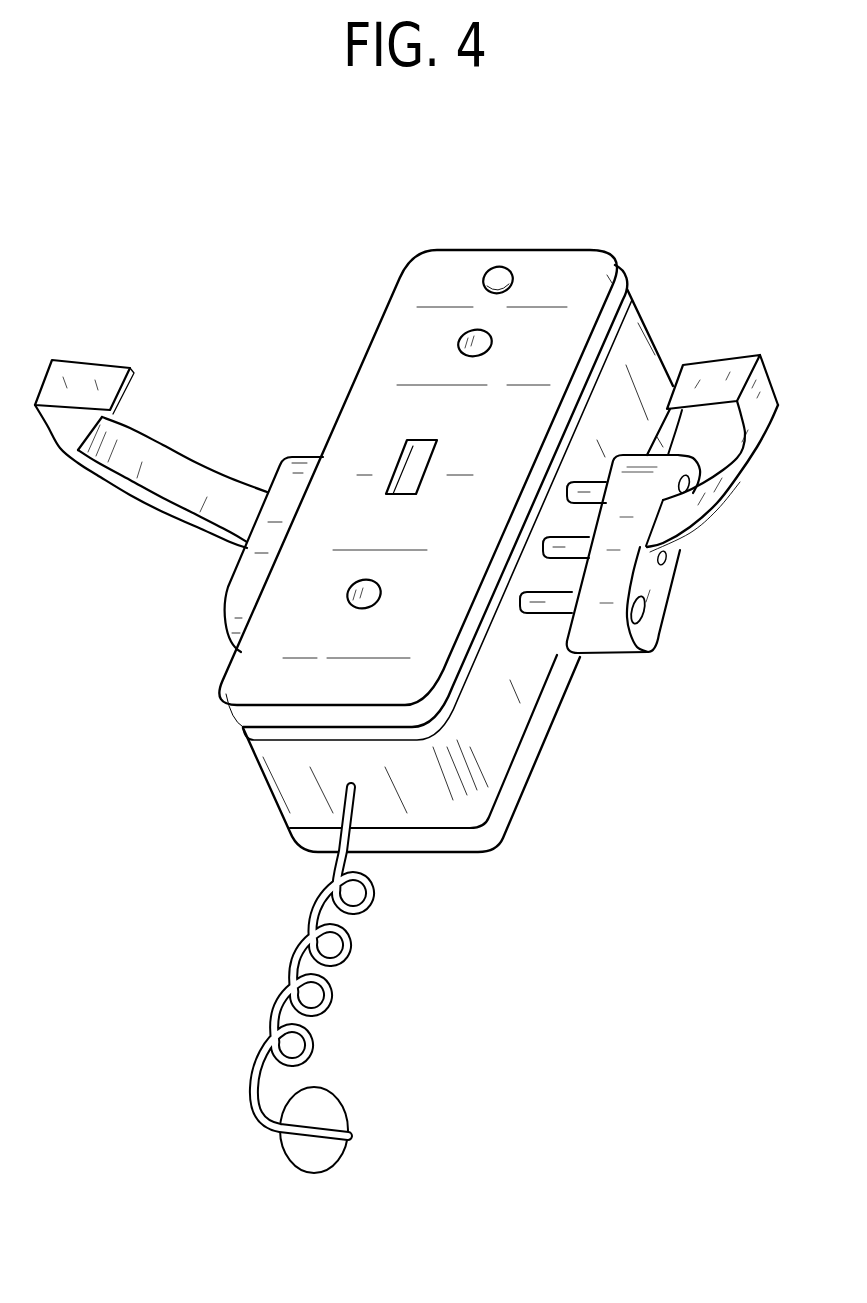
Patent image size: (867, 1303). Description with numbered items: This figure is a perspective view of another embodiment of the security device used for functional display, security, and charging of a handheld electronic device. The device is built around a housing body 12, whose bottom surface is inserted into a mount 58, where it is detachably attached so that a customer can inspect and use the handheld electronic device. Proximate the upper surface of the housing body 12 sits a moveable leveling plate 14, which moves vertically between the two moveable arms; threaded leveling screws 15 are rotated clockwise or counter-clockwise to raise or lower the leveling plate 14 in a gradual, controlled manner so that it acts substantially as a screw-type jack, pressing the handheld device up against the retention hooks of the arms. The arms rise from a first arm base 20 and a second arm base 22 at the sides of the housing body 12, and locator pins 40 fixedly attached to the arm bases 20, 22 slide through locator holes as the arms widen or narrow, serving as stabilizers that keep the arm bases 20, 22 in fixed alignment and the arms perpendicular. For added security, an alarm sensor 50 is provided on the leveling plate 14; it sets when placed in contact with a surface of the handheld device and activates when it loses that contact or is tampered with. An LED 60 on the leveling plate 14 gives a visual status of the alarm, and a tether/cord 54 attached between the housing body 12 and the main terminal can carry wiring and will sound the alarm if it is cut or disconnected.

The housing body 12 is at (640, 354).
The leveling plate 14 is at (543, 249).
The threaded leveling screw 15 is at (458, 340).
The first arm base 20 is at (235, 598).
The second arm base 22 is at (665, 583).
The locator pin 40 is at (542, 608).
The alarm sensor 50 is at (415, 460).
The tether/cord 54 is at (352, 947).
The mount 58 is at (511, 786).
The LED 60 is at (484, 279).